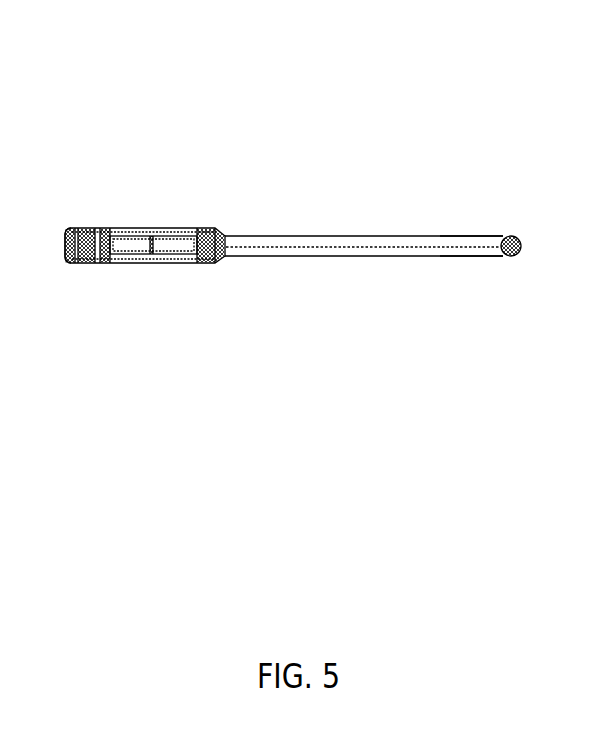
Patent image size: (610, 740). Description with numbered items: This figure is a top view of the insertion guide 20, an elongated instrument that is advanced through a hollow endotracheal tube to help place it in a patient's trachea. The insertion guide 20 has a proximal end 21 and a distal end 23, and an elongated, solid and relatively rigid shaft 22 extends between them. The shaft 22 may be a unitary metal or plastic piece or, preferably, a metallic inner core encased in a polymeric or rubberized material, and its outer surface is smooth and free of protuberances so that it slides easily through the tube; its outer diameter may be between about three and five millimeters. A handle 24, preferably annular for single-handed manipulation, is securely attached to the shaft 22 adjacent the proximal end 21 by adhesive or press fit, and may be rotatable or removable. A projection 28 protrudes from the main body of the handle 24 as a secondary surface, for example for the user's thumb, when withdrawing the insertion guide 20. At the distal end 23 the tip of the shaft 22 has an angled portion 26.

The insertion guide 20 is at (78, 102).
The proximal end 21 is at (267, 235).
The shaft 22 is at (390, 238).
The distal end 23 is at (467, 258).
The handle 24 is at (148, 243).
The angled portion 26 is at (521, 240).
The projection 28 is at (72, 265).